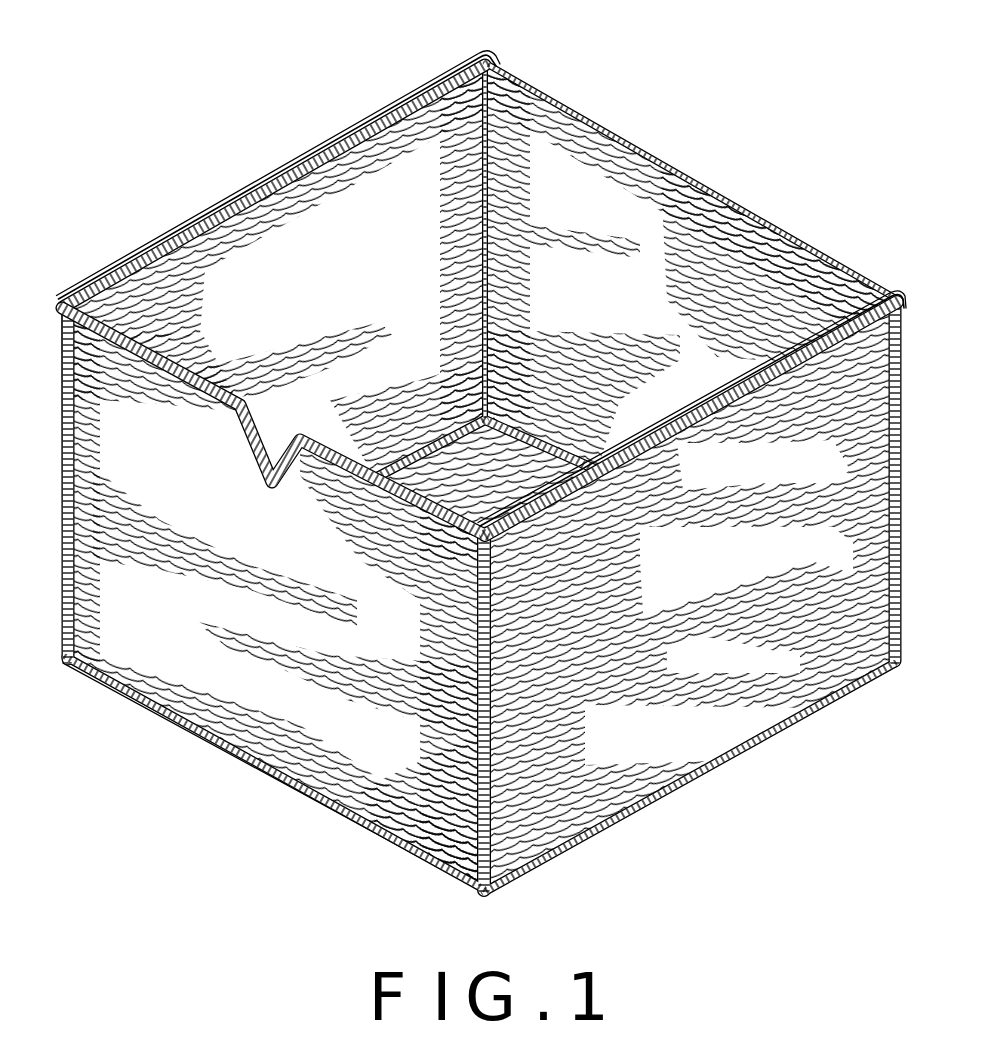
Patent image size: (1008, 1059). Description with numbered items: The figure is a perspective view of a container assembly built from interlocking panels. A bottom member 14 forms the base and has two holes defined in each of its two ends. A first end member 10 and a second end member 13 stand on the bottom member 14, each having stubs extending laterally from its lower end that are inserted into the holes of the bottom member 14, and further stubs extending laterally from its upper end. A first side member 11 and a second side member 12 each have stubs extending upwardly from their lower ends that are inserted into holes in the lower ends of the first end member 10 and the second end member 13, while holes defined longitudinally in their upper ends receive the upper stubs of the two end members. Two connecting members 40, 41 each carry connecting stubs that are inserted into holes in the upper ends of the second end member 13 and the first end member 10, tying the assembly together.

The first end member 10 is at (285, 752).
The first side member 11 is at (648, 778).
The second side member 12 is at (314, 213).
The second end member 13 is at (678, 243).
The bottom member 14 is at (433, 478).
The connecting member 40 is at (862, 307).
The connecting member 41 is at (406, 102).